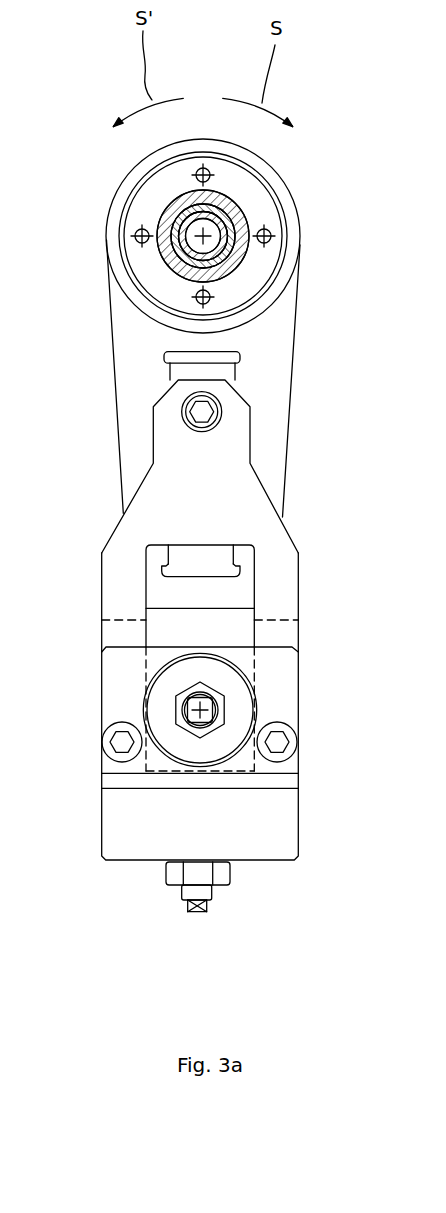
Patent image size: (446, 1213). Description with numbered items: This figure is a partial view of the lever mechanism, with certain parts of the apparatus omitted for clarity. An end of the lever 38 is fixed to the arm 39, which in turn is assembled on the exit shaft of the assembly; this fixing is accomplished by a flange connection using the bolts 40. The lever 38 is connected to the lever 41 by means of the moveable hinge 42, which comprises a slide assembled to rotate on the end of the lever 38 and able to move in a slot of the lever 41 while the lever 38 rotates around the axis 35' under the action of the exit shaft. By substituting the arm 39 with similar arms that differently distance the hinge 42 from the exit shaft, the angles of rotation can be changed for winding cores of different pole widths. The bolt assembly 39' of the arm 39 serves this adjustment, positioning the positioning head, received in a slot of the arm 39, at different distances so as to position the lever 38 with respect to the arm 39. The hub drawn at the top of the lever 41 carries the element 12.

The shaft / hub 12 is at (233, 208).
The lever 41 is at (268, 357).
The moveable hinge 42 is at (194, 447).
The lever 38 is at (278, 583).
The arm 39 is at (268, 709).
The bolts 40 is at (113, 737).
The axis 35' is at (128, 774).
The bolt assembly 39' is at (246, 904).